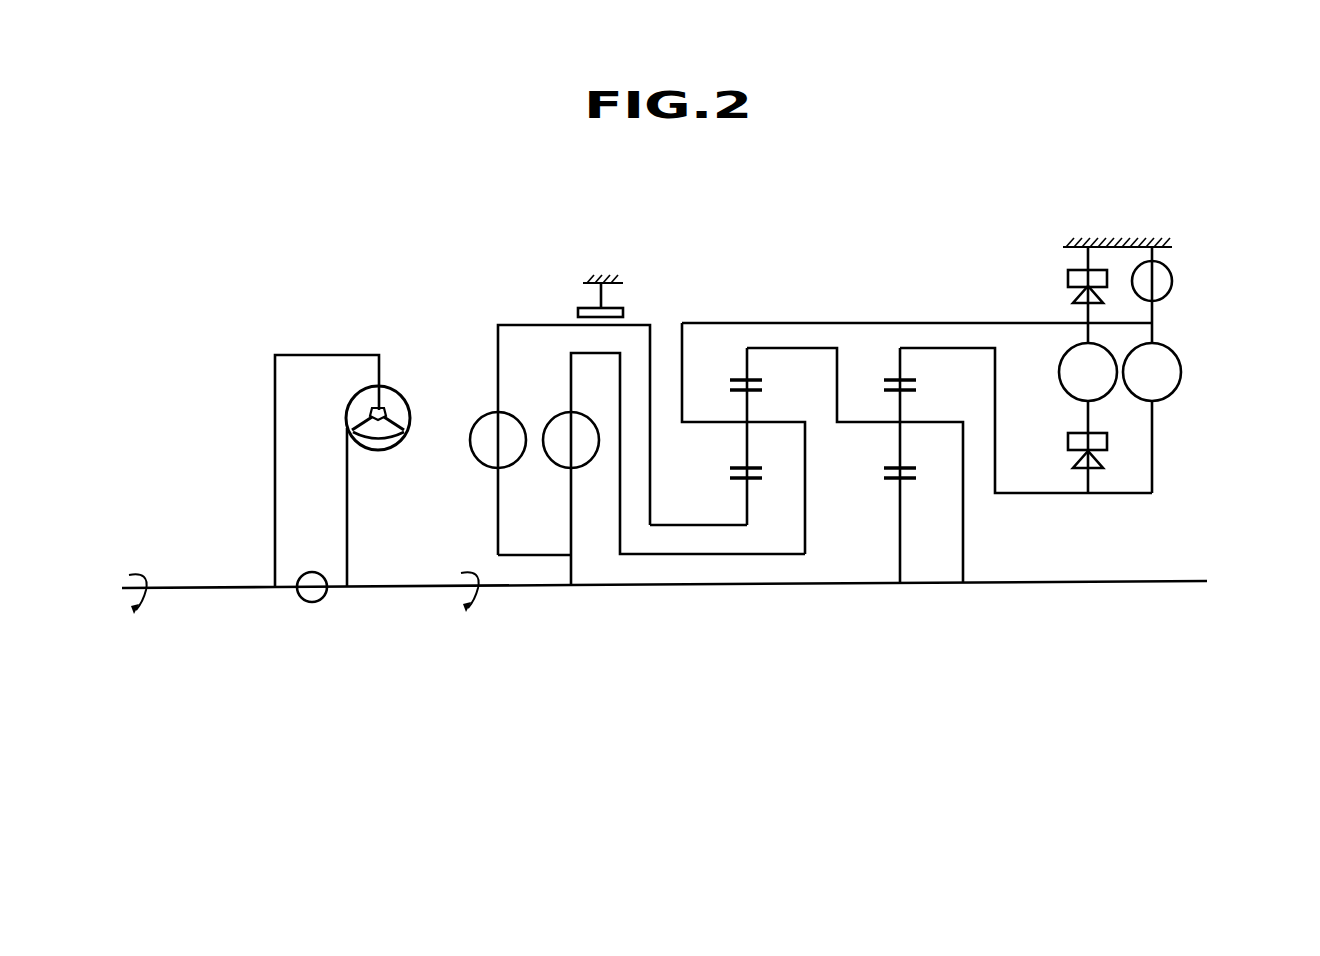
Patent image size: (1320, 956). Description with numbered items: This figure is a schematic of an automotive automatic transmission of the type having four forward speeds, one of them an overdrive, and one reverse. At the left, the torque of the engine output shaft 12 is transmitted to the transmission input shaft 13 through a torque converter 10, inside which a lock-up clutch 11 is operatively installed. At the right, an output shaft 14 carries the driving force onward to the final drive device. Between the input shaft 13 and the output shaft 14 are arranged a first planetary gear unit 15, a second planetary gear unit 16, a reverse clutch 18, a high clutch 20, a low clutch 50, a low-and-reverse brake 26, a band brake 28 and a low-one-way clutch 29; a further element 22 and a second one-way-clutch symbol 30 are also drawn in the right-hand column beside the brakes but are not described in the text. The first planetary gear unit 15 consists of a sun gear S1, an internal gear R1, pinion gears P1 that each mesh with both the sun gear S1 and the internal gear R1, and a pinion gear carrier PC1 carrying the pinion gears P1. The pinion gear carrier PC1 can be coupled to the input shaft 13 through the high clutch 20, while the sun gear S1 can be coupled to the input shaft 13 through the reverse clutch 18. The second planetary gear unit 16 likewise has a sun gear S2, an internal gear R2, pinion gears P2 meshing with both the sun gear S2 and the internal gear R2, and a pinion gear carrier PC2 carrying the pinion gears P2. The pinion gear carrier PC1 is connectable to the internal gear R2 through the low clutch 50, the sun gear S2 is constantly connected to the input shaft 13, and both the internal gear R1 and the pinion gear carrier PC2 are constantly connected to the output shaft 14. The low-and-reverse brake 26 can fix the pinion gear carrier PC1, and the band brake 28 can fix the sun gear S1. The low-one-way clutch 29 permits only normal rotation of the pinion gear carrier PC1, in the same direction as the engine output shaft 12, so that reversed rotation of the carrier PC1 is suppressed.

The torque converter 10 is at (396, 386).
The lock-up clutch 11 is at (312, 603).
The engine output shaft 12 is at (212, 585).
The input shaft 13 is at (416, 590).
The output shaft 14 is at (1048, 580).
The first planetary gear unit 15 is at (732, 360).
The second planetary gear unit 16 is at (908, 350).
The reverse clutch 18 is at (478, 422).
The high clutch 20 is at (552, 422).
The brake 22 is at (1066, 394).
The low-and-reverse brake 26 is at (1174, 283).
The band brake 28 is at (603, 296).
The low-one-way clutch 29 is at (1066, 276).
The one-way clutch 30 is at (1067, 448).
The low clutch 50 is at (1182, 372).
The internal gear R1 is at (748, 369).
The internal gear R2 is at (902, 369).
The pinion gear carrier PC1 is at (787, 422).
The pinion gear carrier PC2 is at (945, 422).
The pinion gears P1 is at (746, 450).
The pinion gears P2 is at (899, 450).
The sun gear S1 is at (748, 496).
The sun gear S2 is at (902, 545).